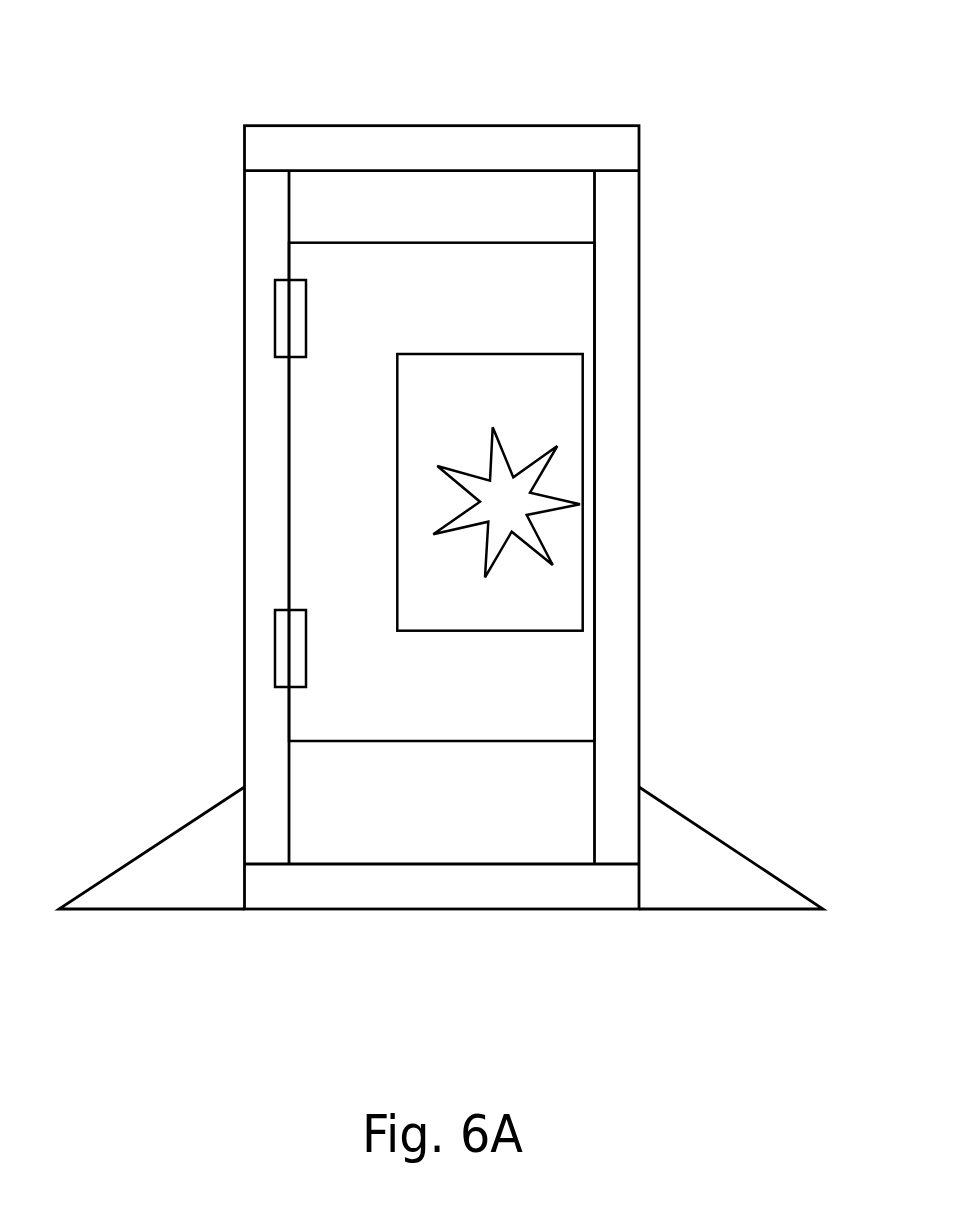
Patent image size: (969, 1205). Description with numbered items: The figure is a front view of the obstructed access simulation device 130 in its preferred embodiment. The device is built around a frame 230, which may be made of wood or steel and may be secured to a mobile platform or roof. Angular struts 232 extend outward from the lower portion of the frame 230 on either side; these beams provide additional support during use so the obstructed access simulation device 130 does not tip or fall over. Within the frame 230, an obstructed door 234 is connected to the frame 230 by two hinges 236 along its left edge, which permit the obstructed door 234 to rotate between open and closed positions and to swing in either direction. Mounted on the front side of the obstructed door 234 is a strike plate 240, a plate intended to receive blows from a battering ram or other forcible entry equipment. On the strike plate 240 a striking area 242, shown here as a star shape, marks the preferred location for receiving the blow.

The obstructed access simulation device 130 is at (522, 76).
The frame 230 is at (244, 539).
The struts 232 is at (150, 847).
The obstructed door 234 is at (321, 457).
The hinges 236 is at (275, 319).
The strike plate 240 is at (548, 402).
The striking area 242 is at (504, 503).